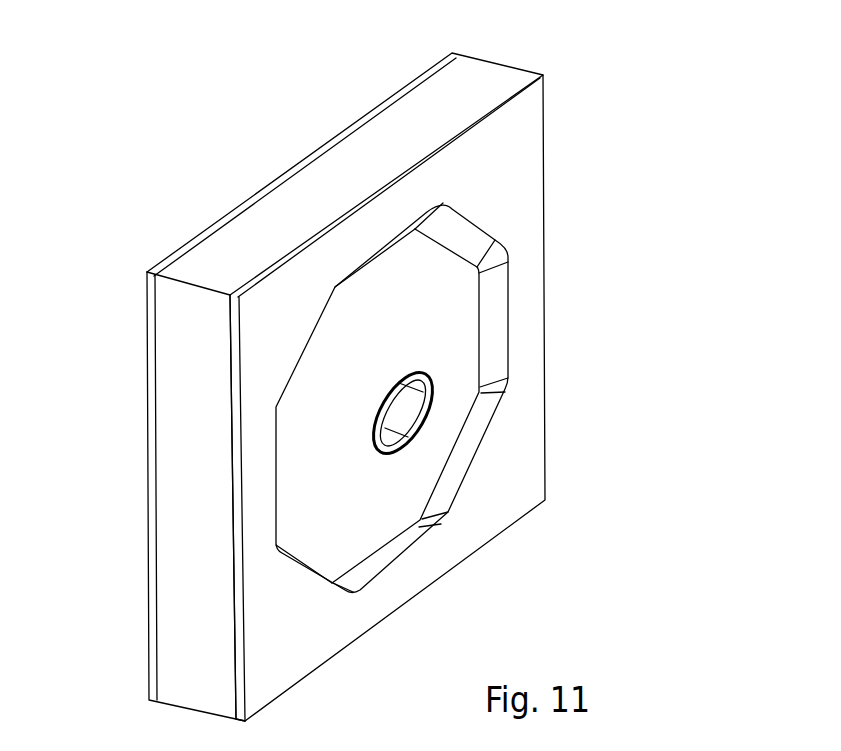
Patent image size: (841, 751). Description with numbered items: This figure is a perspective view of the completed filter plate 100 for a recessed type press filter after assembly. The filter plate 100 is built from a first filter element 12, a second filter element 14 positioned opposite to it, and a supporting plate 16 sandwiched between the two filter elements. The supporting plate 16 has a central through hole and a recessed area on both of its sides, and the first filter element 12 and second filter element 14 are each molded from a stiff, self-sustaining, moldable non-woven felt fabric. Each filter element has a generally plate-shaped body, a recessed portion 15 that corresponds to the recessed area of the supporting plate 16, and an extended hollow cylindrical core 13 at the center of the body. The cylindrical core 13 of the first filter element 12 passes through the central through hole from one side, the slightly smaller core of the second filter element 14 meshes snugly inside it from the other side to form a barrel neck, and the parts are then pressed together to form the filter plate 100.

The filter plate 100 is at (413, 371).
The first filter element 12 is at (544, 186).
The extended hollow cylindrical core 13 is at (405, 412).
The second filter element 14 is at (212, 227).
The recessed portion 15 is at (388, 487).
The supporting plate 16 is at (463, 83).